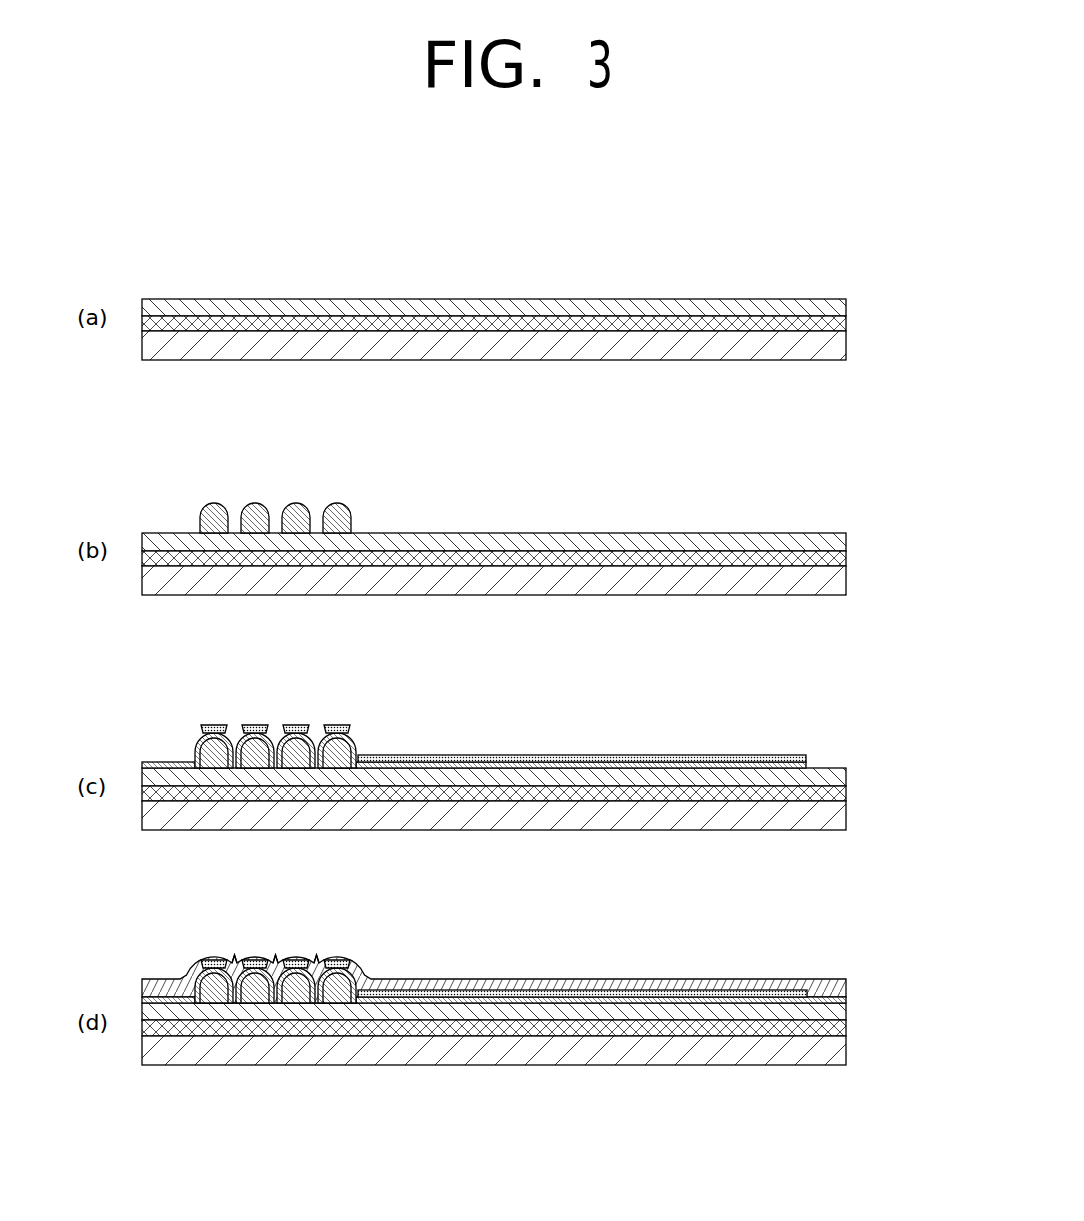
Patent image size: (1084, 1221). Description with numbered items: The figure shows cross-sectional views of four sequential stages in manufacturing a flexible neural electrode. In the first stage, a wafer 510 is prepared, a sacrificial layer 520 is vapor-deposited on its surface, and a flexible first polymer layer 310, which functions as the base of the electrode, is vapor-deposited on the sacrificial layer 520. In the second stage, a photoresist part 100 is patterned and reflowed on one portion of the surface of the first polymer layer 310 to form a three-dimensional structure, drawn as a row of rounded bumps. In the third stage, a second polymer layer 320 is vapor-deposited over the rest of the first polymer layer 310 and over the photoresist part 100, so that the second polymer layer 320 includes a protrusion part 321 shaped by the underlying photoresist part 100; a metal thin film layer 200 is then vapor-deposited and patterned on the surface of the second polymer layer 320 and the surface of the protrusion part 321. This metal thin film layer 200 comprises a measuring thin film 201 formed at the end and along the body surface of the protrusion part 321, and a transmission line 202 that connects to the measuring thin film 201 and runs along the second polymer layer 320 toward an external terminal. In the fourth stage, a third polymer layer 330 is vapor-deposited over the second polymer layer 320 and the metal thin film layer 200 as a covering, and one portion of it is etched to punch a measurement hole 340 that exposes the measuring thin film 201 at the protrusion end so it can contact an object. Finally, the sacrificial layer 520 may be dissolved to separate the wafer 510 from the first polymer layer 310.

The photoresist part 100 is at (350, 513).
The metal thin film layer 200 is at (403, 667).
The measuring thin film 201 is at (337, 731).
The transmission line 202 is at (393, 757).
The first polymer layer 310 is at (846, 308).
The second polymer layer 320 is at (577, 764).
The protrusion part 321 is at (268, 733).
The third polymer layer 330 is at (730, 982).
The measurement hole 340 is at (226, 958).
The wafer 510 is at (848, 346).
The sacrificial layer 520 is at (848, 324).